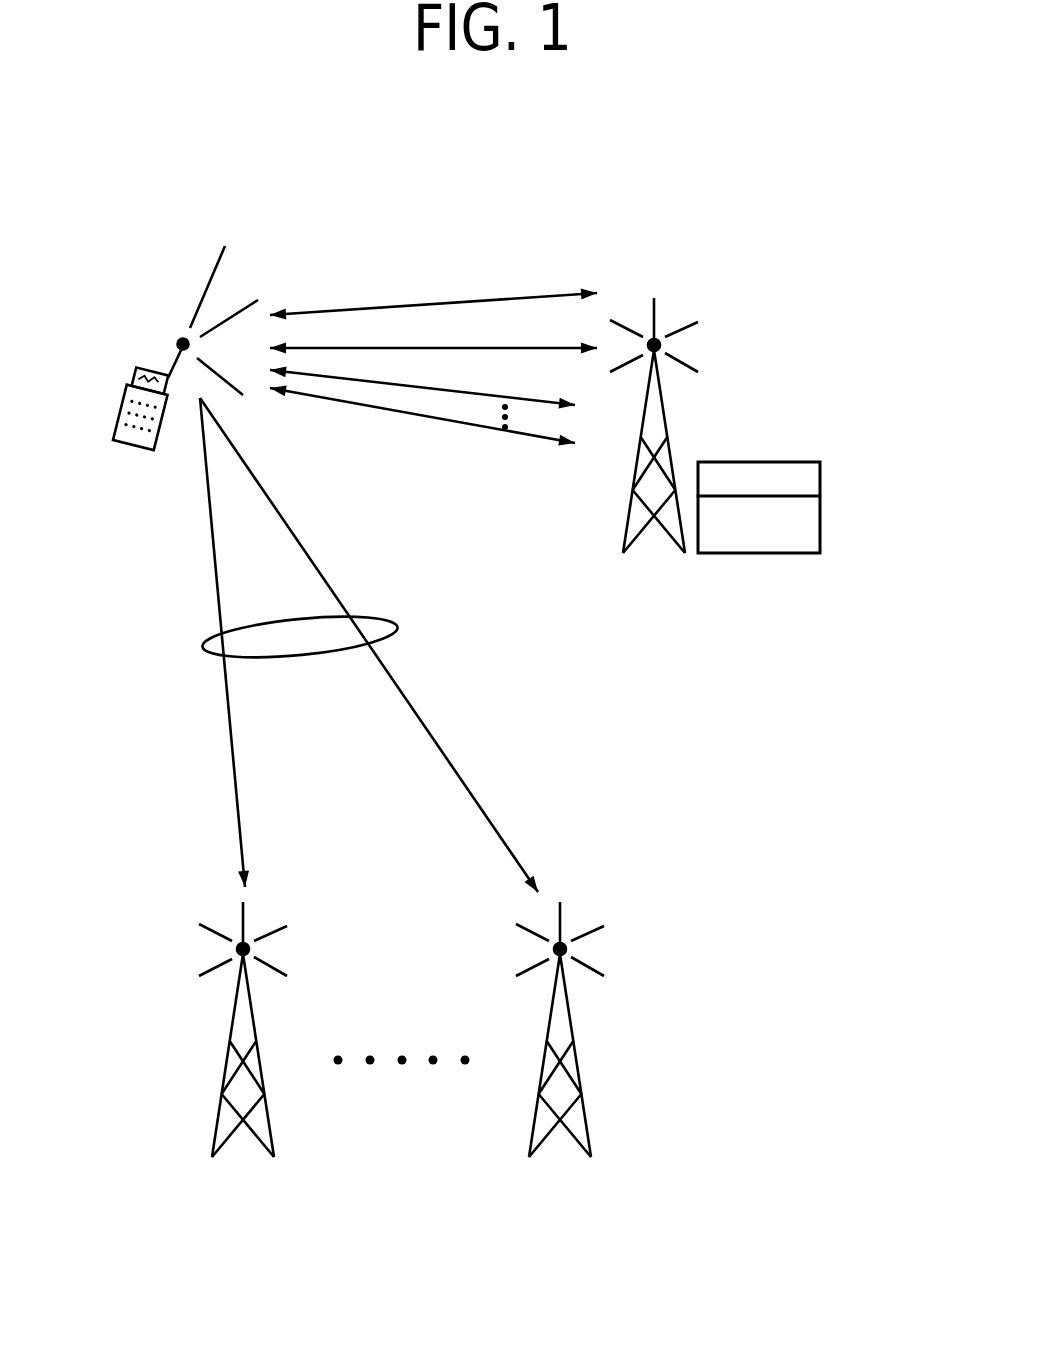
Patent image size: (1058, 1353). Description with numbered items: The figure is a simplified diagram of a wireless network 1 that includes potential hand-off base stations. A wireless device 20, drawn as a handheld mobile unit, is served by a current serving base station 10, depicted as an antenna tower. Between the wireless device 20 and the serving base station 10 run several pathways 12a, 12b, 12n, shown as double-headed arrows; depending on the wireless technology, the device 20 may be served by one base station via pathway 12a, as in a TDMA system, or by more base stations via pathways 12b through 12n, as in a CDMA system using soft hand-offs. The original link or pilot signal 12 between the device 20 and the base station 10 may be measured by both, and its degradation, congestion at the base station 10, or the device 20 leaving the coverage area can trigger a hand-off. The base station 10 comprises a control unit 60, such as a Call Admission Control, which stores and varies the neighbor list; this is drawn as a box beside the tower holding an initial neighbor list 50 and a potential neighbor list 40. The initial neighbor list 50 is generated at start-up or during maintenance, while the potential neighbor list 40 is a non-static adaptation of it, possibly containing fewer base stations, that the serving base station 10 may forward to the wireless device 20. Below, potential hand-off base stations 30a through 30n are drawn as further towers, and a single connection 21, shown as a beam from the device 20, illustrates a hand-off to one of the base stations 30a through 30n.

The wireless network 1 is at (417, 238).
The current serving base station 10 is at (748, 295).
The link or pilot signal 12 is at (433, 302).
The pathway 12a is at (460, 348).
The pathway 12b is at (468, 393).
The pathway 12n is at (475, 425).
The wireless device 20 is at (130, 445).
The connection 21 is at (385, 626).
The potential hand-off base station 30a is at (242, 1205).
The potential hand-off base station 30n is at (553, 1192).
The potential neighbor list 40 is at (820, 530).
The initial neighbor list 50 is at (820, 485).
The control unit 60 is at (803, 437).